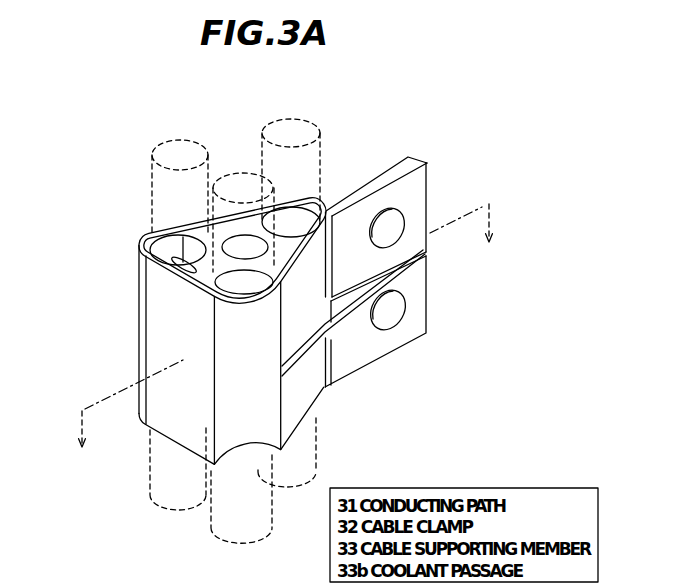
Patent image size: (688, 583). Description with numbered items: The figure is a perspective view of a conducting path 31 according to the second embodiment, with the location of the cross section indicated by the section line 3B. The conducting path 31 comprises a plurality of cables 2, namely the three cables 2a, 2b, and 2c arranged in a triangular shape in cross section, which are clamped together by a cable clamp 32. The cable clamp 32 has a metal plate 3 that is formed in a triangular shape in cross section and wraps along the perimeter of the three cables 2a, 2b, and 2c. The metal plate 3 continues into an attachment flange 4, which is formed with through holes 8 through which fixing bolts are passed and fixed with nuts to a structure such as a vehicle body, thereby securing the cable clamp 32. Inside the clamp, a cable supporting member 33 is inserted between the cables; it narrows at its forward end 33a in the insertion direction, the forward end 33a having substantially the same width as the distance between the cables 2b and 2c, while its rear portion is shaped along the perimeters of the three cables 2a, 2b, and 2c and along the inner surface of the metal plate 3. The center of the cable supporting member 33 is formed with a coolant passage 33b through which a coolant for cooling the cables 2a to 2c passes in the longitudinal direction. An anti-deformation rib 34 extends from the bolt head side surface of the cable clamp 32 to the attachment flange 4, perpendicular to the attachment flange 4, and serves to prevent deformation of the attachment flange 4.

The cables 2 is at (318, 124).
The cable 2a is at (292, 121).
The cable 2b is at (178, 150).
The cable 2c is at (246, 184).
The metal plate 3 is at (293, 413).
The section line 3B- 3B is at (282, 325).
The attachment flange 4 is at (408, 330).
The through holes 8 is at (397, 213).
The conducting path 31 is at (503, 126).
The cable clamp 32 is at (412, 153).
The cable supporting member 33 is at (148, 257).
The forward end 33a is at (173, 272).
The coolant passage 33b is at (237, 238).
The anti-deformation rib 34 is at (408, 265).